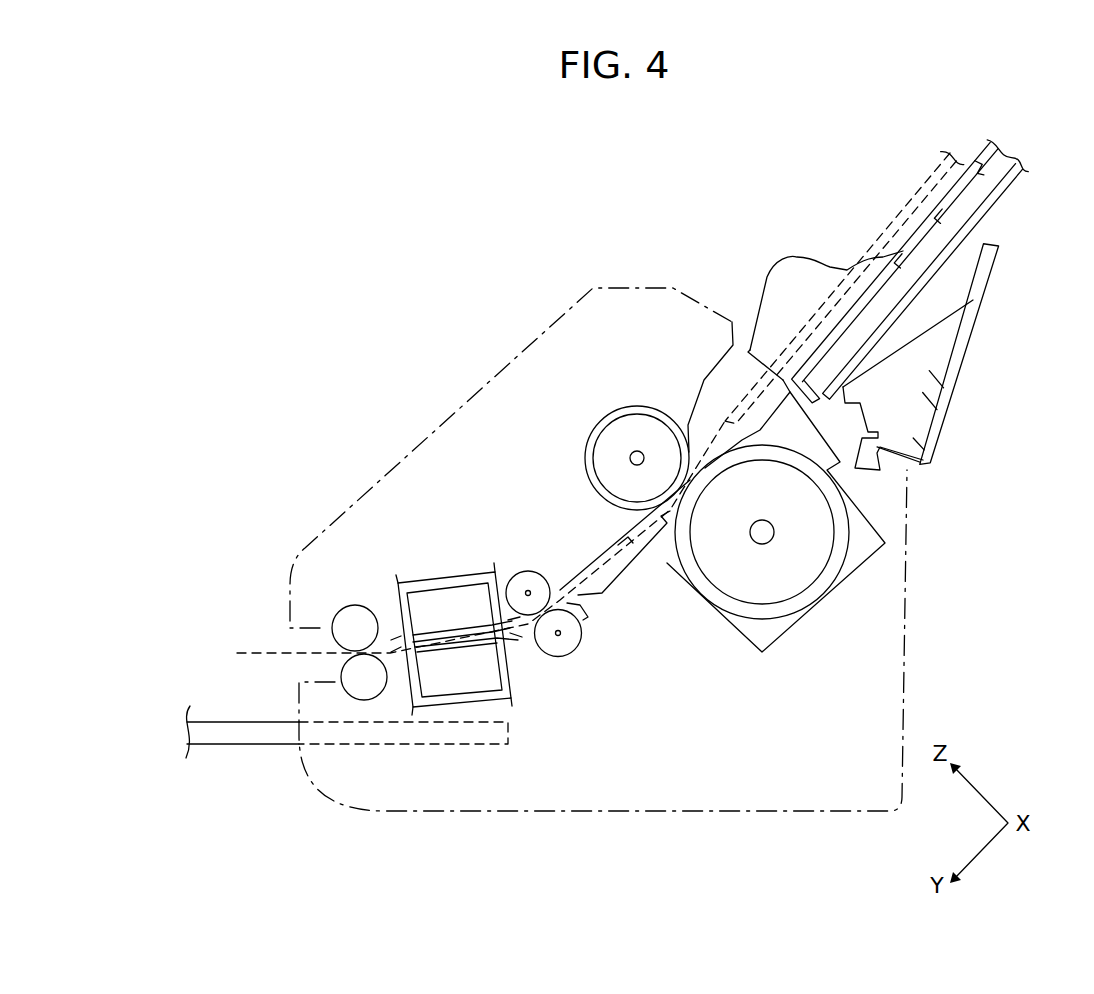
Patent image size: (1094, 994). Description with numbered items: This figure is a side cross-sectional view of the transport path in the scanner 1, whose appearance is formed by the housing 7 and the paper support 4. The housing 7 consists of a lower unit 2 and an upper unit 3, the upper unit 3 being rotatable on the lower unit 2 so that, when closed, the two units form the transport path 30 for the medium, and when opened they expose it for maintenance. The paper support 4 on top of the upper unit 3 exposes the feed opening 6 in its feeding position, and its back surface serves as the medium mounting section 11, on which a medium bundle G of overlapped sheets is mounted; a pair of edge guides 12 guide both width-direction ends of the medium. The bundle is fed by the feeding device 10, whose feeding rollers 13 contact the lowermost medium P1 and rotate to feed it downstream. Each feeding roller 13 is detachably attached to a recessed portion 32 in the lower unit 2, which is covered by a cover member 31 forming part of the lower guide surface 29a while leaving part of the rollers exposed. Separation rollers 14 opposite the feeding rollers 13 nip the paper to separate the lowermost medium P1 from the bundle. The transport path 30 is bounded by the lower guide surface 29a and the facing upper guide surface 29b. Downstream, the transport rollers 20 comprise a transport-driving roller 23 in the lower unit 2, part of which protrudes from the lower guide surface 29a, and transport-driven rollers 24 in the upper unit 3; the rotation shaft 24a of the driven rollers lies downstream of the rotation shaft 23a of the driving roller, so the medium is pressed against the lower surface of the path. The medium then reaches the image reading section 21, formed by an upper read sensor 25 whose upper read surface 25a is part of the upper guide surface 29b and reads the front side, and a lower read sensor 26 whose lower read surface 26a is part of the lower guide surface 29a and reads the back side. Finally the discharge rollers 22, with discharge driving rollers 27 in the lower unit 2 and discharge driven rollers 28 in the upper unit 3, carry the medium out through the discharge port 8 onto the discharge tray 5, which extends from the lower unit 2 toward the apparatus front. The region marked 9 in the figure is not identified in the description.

The scanner 1 is at (403, 278).
The lower unit 2 is at (908, 660).
The upper unit 3 is at (571, 311).
The paper support 4 is at (943, 267).
The discharge tray 5 is at (223, 722).
The feed opening 6 is at (739, 302).
The housing 7 is at (598, 549).
The discharge port 8 is at (288, 643).
The transport path 9 is at (563, 371).
The feeding device 10 is at (851, 610).
The medium mounting section 11 is at (910, 237).
The edge guides 12 is at (780, 265).
The feeding rollers 13 is at (849, 543).
The separation rollers 14 is at (637, 405).
The transport rollers 20 is at (539, 620).
The image reading section 21 is at (405, 610).
The discharge rollers 22 is at (322, 679).
The transport-driving roller 23 is at (579, 652).
The rotation shaft 23a is at (558, 633).
The transport-driven rollers 24 is at (510, 572).
The rotation shaft 24a is at (528, 593).
The upper read sensor 25 is at (440, 600).
The upper read surface 25a is at (457, 633).
The lower read sensor 26 is at (464, 702).
The lower read surface 26a is at (455, 645).
The discharge driving rollers 27 is at (371, 700).
The discharge driven rollers 28 is at (338, 614).
The lower guide surface 29a is at (630, 560).
The upper guide surface 29b is at (622, 537).
The transport path 30 is at (582, 572).
The cover member 31 is at (818, 443).
The recessed portion 32 is at (867, 510).
The medium bundle G is at (872, 240).
The lowermost medium P1 is at (830, 312).